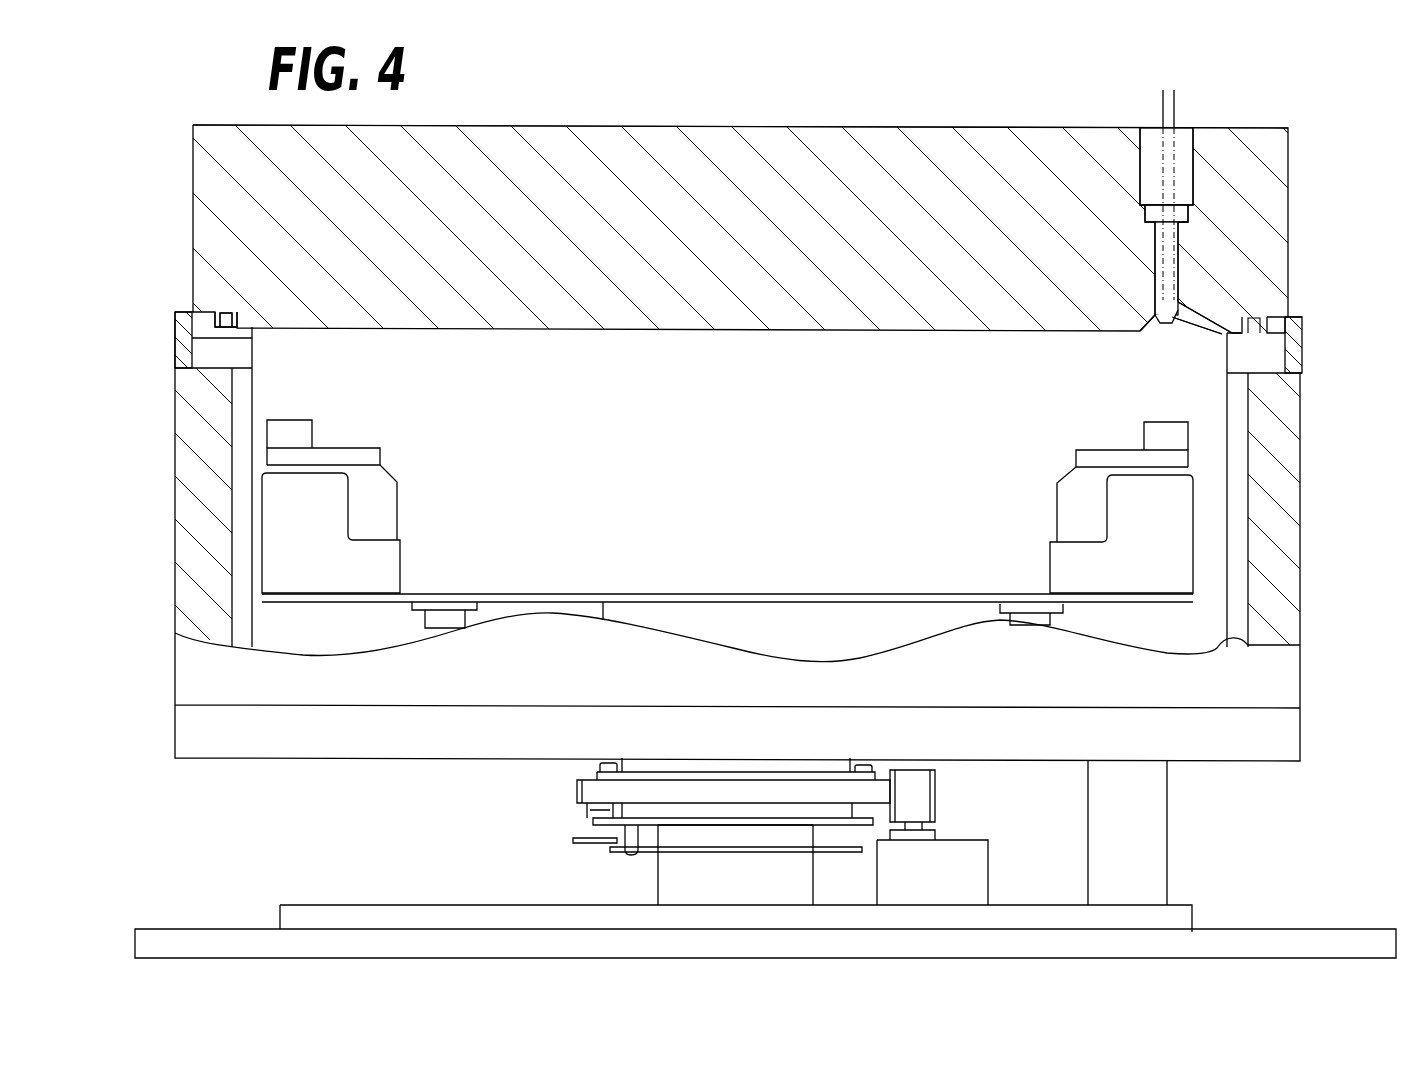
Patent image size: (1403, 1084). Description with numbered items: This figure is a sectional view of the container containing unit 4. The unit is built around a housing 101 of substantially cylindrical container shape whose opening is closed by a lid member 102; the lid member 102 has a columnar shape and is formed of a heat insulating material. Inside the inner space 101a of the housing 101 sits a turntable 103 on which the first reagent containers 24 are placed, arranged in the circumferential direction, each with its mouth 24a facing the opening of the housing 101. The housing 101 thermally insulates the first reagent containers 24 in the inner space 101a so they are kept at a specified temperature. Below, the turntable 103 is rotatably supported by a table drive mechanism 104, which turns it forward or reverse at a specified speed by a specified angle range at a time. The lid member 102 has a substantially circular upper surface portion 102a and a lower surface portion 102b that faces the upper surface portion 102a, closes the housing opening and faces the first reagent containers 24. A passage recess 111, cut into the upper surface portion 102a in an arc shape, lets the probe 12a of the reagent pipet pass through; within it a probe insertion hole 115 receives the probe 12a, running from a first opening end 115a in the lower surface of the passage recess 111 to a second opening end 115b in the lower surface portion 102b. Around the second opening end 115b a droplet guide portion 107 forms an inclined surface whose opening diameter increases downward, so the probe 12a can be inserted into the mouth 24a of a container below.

The container containing unit 4 is at (452, 104).
The lid member 102 is at (206, 192).
The upper surface portion 102a is at (237, 125).
The lower surface portion 102b is at (308, 329).
The probe 12a is at (1157, 110).
The passage recess 111 is at (1148, 147).
The probe insertion hole 115 is at (1157, 257).
The first opening end 115a is at (1174, 245).
The second opening end 115b is at (1181, 302).
The droplet guide portion 107 is at (1228, 346).
The housing 101 is at (1284, 577).
The inner space 101a is at (1213, 651).
The first reagent container 24 is at (283, 548).
The mouth 24a is at (1187, 438).
The turntable 103 is at (518, 597).
The table drive mechanism 104 is at (935, 795).